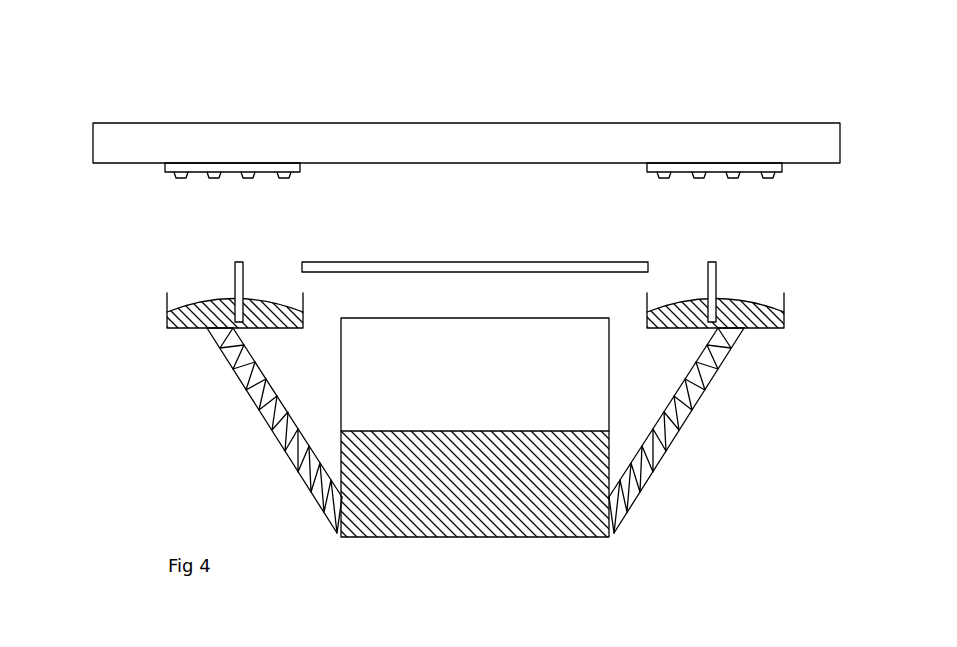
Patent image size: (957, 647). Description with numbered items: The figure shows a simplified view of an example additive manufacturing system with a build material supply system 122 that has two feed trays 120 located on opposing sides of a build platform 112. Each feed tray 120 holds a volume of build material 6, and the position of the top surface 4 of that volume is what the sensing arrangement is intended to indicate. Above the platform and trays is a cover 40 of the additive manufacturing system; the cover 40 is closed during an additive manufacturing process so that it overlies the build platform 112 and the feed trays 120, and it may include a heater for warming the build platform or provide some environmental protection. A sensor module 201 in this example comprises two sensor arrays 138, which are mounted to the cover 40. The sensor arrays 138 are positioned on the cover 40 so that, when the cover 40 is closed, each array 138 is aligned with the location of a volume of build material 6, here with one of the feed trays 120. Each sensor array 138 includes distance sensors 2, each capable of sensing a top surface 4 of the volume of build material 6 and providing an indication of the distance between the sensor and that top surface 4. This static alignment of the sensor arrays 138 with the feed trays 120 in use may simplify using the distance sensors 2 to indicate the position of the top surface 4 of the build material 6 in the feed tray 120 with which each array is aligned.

The sensor module 201 is at (775, 85).
The cover 40 is at (511, 145).
The sensor arrays 138 is at (250, 170).
The distance sensor 2 is at (181, 178).
The build material supply system 122 is at (125, 236).
The build platform 112 is at (484, 261).
The feed trays 120 is at (167, 308).
The top surface 4 is at (260, 300).
The volume of build material 6 is at (183, 328).